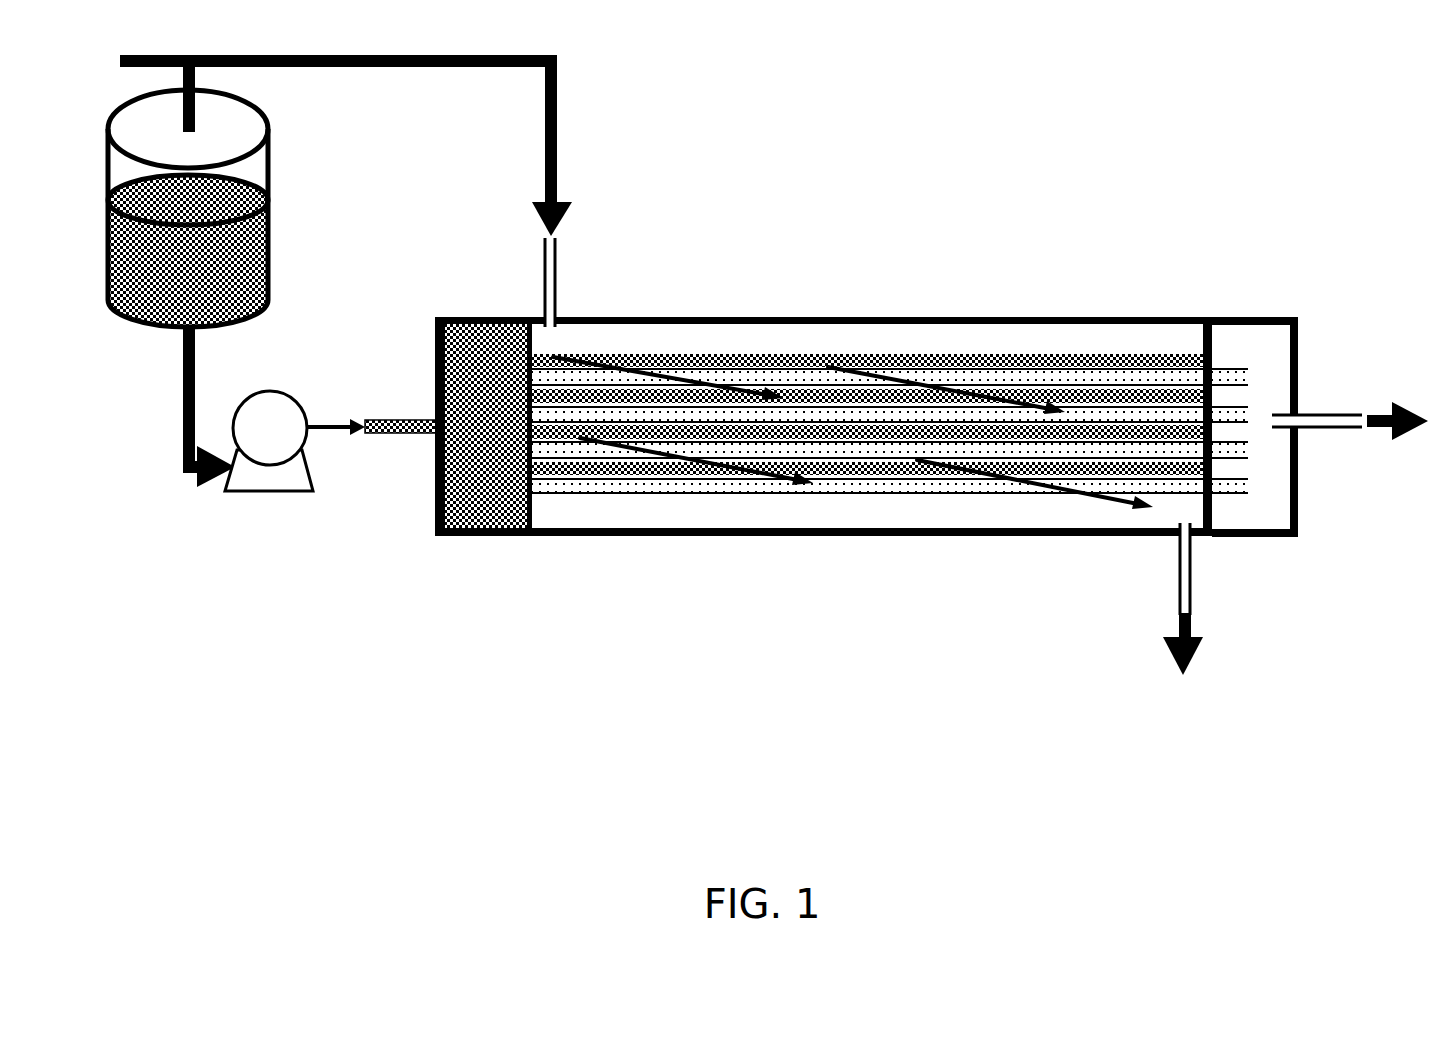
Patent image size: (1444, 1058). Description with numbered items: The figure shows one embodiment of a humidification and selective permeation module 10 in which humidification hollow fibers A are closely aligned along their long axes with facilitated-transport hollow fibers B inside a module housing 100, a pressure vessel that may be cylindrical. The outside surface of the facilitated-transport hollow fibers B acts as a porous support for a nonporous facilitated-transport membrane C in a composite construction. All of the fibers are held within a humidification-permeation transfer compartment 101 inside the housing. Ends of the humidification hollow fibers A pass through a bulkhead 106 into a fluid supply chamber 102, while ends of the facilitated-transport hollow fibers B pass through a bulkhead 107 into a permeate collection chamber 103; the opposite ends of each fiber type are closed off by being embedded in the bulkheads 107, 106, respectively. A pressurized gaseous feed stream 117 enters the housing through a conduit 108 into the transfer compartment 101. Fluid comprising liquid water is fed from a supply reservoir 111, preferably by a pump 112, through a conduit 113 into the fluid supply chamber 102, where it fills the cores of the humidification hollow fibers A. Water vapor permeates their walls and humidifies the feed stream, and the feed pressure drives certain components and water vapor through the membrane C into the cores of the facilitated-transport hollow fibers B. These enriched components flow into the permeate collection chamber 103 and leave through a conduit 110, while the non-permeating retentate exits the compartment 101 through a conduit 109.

The humidification and selective permeation module 10 is at (931, 409).
The module housing 100 is at (867, 317).
The humidification-permeation transfer compartment 101 is at (817, 524).
The fluid supply chamber 102 is at (470, 347).
The permeate collection chamber 103 is at (1270, 353).
The bulkhead 106 is at (535, 513).
The bulkhead 107 is at (1203, 340).
The conduit 108 is at (555, 283).
The conduit 109 is at (1177, 569).
The conduit 110 is at (1333, 410).
The supply reservoir 111 is at (270, 208).
The pump 112 is at (270, 491).
The conduit 113 is at (403, 433).
The gaseous feed stream 117 is at (345, 68).
The humidification hollow fibers A is at (1033, 353).
The facilitated-transport hollow fibers B is at (690, 487).
The nonporous facilitated-transport membrane C is at (740, 492).